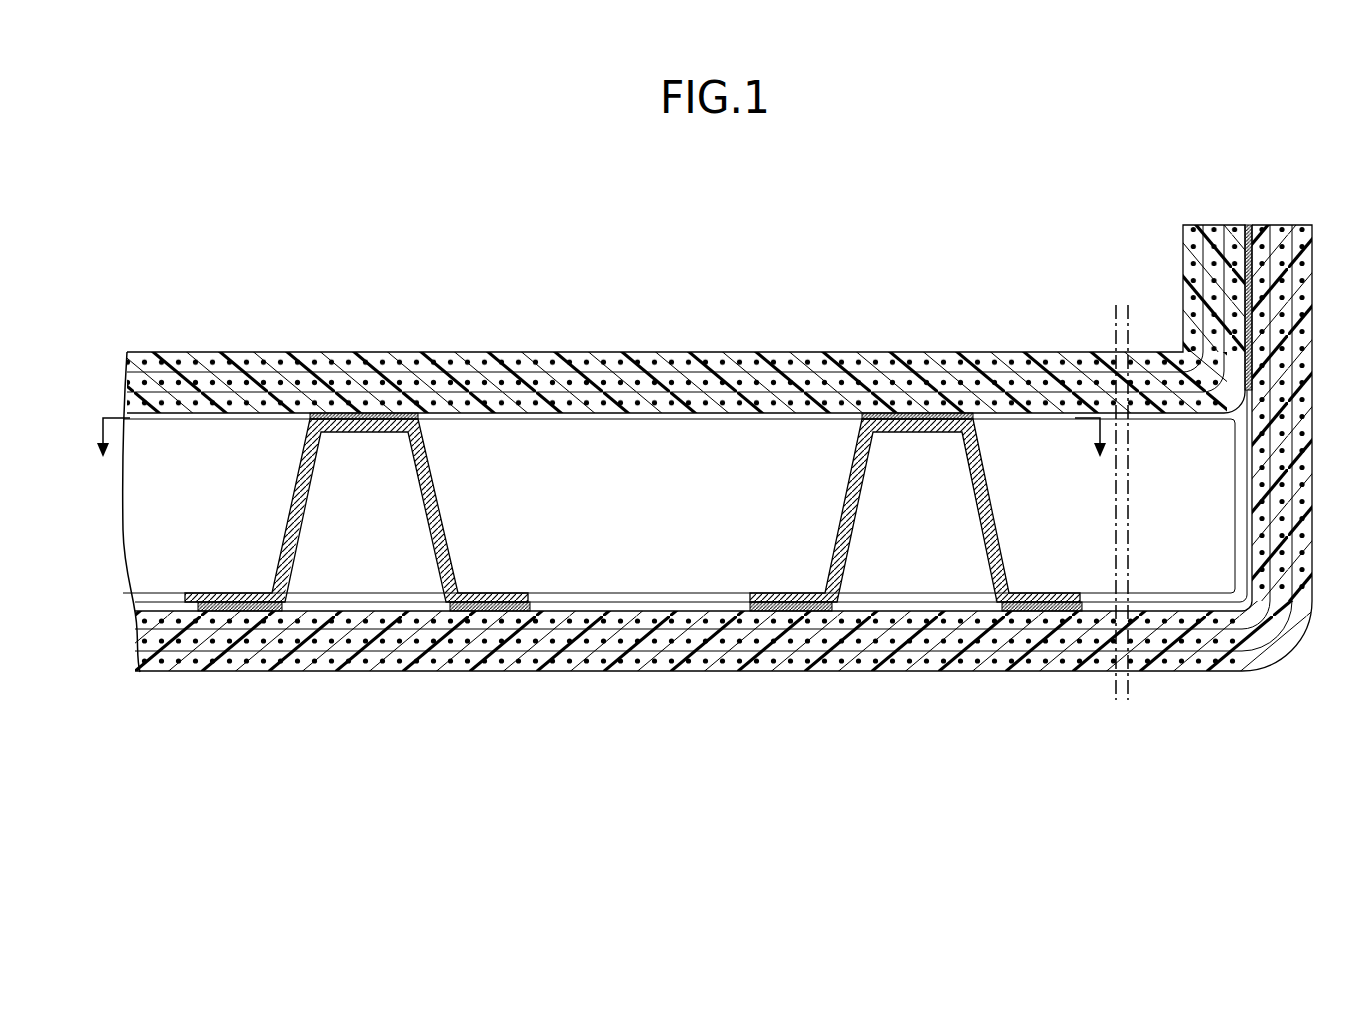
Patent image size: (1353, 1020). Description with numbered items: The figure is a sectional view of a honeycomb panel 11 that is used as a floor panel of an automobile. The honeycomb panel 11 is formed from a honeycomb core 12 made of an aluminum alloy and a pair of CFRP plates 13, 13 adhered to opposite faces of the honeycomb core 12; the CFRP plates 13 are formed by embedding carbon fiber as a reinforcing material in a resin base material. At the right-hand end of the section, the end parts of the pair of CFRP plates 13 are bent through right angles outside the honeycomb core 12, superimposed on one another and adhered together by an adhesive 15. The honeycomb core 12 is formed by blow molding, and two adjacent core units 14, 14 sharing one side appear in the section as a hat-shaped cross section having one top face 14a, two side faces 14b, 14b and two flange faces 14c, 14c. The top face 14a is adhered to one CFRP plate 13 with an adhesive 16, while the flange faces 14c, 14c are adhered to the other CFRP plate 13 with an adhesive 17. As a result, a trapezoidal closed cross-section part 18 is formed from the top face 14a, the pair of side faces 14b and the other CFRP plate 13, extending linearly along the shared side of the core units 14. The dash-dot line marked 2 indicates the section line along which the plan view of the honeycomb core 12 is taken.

The section line 2 is at (610, 502).
The honeycomb panel 11 is at (607, 298).
The honeycomb core 12 is at (443, 466).
The CFRP plate 13 is at (740, 350).
The core unit 14 is at (877, 510).
The top face 14a is at (362, 433).
The side face 14b is at (291, 508).
The flange face 14c is at (242, 592).
The adhesive 15 is at (1247, 225).
The adhesive 16 is at (305, 418).
The adhesive 17 is at (195, 605).
The closed cross-section part 18 is at (378, 542).